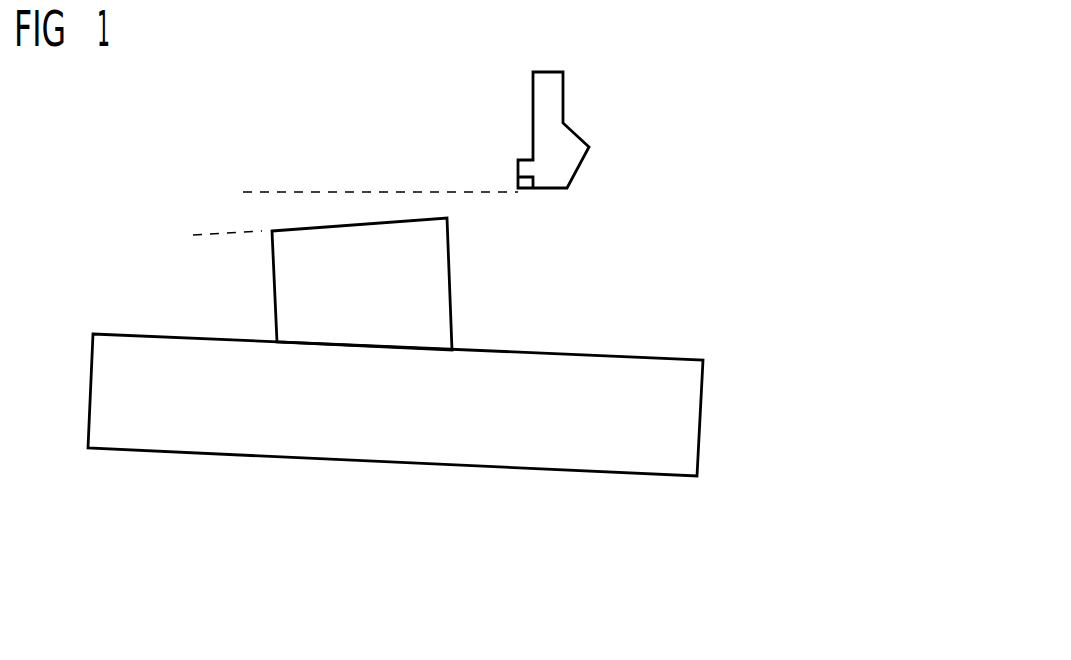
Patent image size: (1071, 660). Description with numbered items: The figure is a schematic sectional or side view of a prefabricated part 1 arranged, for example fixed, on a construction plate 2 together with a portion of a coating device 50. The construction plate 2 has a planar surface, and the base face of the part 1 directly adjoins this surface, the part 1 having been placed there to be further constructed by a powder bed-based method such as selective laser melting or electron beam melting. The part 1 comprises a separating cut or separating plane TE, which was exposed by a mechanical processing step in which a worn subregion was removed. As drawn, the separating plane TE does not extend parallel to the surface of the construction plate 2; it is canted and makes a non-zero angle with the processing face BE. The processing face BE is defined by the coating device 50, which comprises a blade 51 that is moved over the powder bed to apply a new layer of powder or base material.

The part 1 is at (433, 292).
The construction plate 2 is at (682, 423).
The coating device 50 is at (551, 90).
The blade 51 is at (527, 186).
The processing face BE is at (374, 192).
The separating plane TE is at (201, 234).